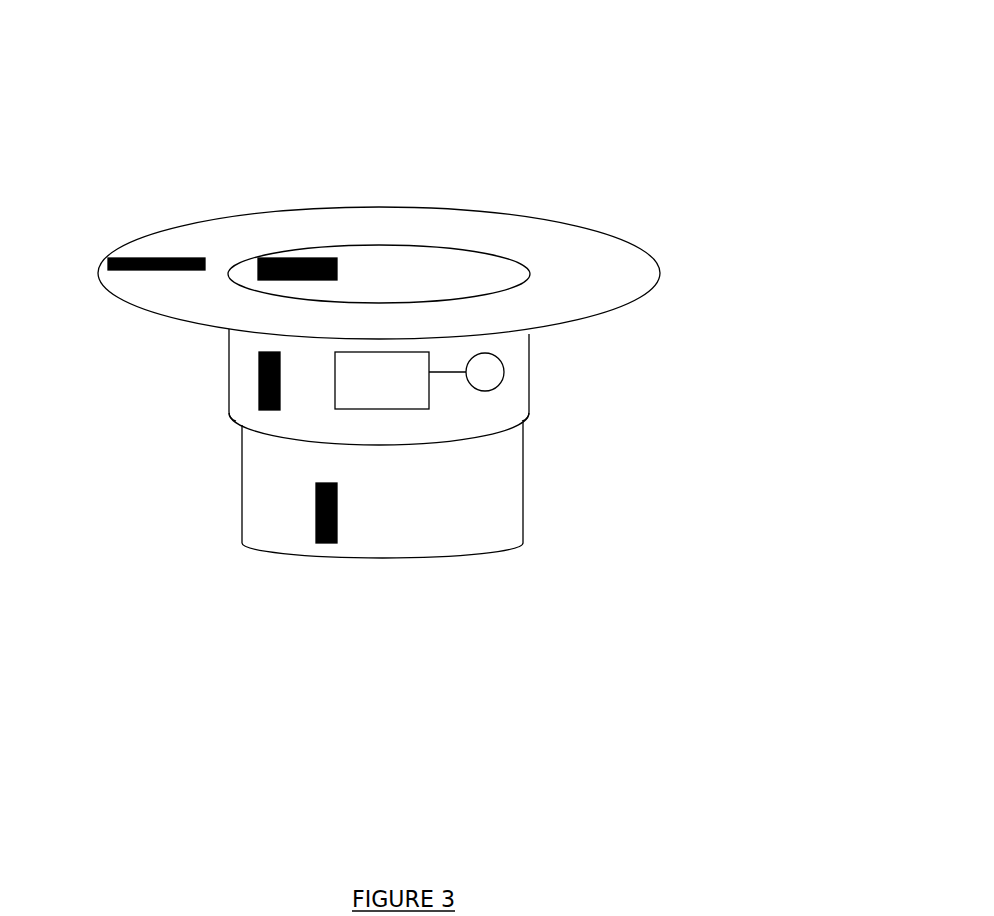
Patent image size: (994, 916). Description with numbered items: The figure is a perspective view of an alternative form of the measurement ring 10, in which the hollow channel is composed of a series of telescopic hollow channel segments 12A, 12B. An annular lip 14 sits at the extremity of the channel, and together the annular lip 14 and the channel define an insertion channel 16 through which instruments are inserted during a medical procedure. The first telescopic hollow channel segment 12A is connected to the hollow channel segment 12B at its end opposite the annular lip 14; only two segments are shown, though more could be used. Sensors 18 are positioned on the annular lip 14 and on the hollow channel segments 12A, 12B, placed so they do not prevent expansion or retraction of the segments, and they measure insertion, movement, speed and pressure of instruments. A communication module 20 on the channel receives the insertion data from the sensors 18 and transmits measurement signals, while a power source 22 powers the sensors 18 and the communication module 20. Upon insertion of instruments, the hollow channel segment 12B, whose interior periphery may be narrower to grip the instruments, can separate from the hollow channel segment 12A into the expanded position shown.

The measurement ring 10 is at (619, 156).
The first telescopic hollow channel segment 12A is at (529, 390).
The second telescopic hollow channel segment 12B is at (523, 502).
The annular lip 14 is at (657, 258).
The insertion channel 16 is at (369, 172).
The sensors 18 is at (316, 500).
The communication module 20 is at (390, 409).
The power source 22 is at (503, 385).